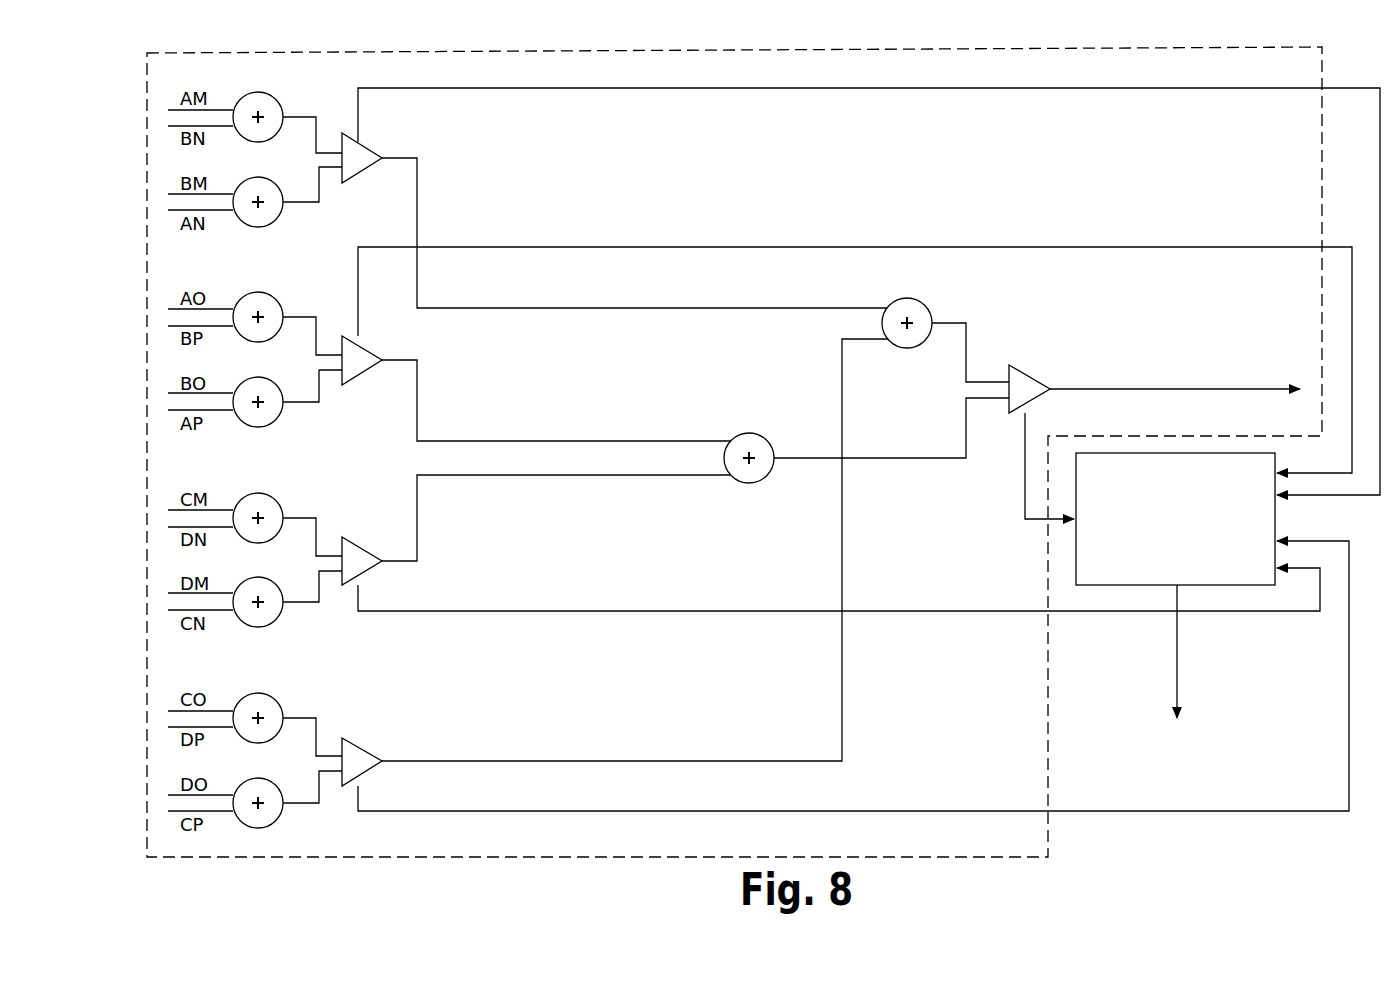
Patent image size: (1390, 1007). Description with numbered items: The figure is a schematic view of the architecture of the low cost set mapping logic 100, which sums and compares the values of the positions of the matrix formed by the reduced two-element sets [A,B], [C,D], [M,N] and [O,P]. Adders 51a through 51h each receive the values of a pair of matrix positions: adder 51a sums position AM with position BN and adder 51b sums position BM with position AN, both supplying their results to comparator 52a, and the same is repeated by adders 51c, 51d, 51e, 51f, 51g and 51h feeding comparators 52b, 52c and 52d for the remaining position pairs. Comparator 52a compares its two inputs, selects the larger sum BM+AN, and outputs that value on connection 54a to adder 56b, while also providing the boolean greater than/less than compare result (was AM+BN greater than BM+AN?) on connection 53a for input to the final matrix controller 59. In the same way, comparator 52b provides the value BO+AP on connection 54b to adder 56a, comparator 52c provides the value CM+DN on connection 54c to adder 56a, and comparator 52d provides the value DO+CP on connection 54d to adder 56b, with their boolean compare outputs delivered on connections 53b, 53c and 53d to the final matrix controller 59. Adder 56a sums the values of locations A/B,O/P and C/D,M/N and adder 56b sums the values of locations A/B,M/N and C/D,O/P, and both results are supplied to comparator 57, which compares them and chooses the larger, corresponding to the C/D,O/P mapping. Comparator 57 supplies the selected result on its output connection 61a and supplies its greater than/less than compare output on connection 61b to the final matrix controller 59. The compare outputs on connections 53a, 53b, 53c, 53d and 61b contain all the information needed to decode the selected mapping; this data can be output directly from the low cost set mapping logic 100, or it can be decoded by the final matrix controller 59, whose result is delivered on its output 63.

The low cost set mapping logic 100 is at (1292, 76).
The adder 51a is at (258, 92).
The adder 51b is at (258, 227).
The adder 51c is at (258, 292).
The adder 51d is at (258, 427).
The adder 51e is at (258, 493).
The adder 51f is at (258, 627).
The adder 51g is at (258, 693).
The adder 51h is at (258, 828).
The comparator 52a is at (342, 183).
The comparator 52b is at (342, 385).
The comparator 52c is at (345, 537).
The comparator 52d is at (345, 738).
The connection 53a is at (422, 88).
The connection 53b is at (450, 247).
The connection 53c is at (378, 611).
The connection 53d is at (643, 811).
The connection 54a is at (417, 175).
The connection 54b is at (417, 378).
The connection 54c is at (470, 475).
The connection 54d is at (448, 761).
The adder 56a is at (750, 434).
The adder 56b is at (907, 298).
The comparator 57 is at (1009, 365).
The final matrix controller 59 is at (1112, 581).
The output connection of comparator 57 61a is at (1077, 390).
The connection 61b is at (1024, 435).
The output of final matrix controller 63 is at (1177, 650).